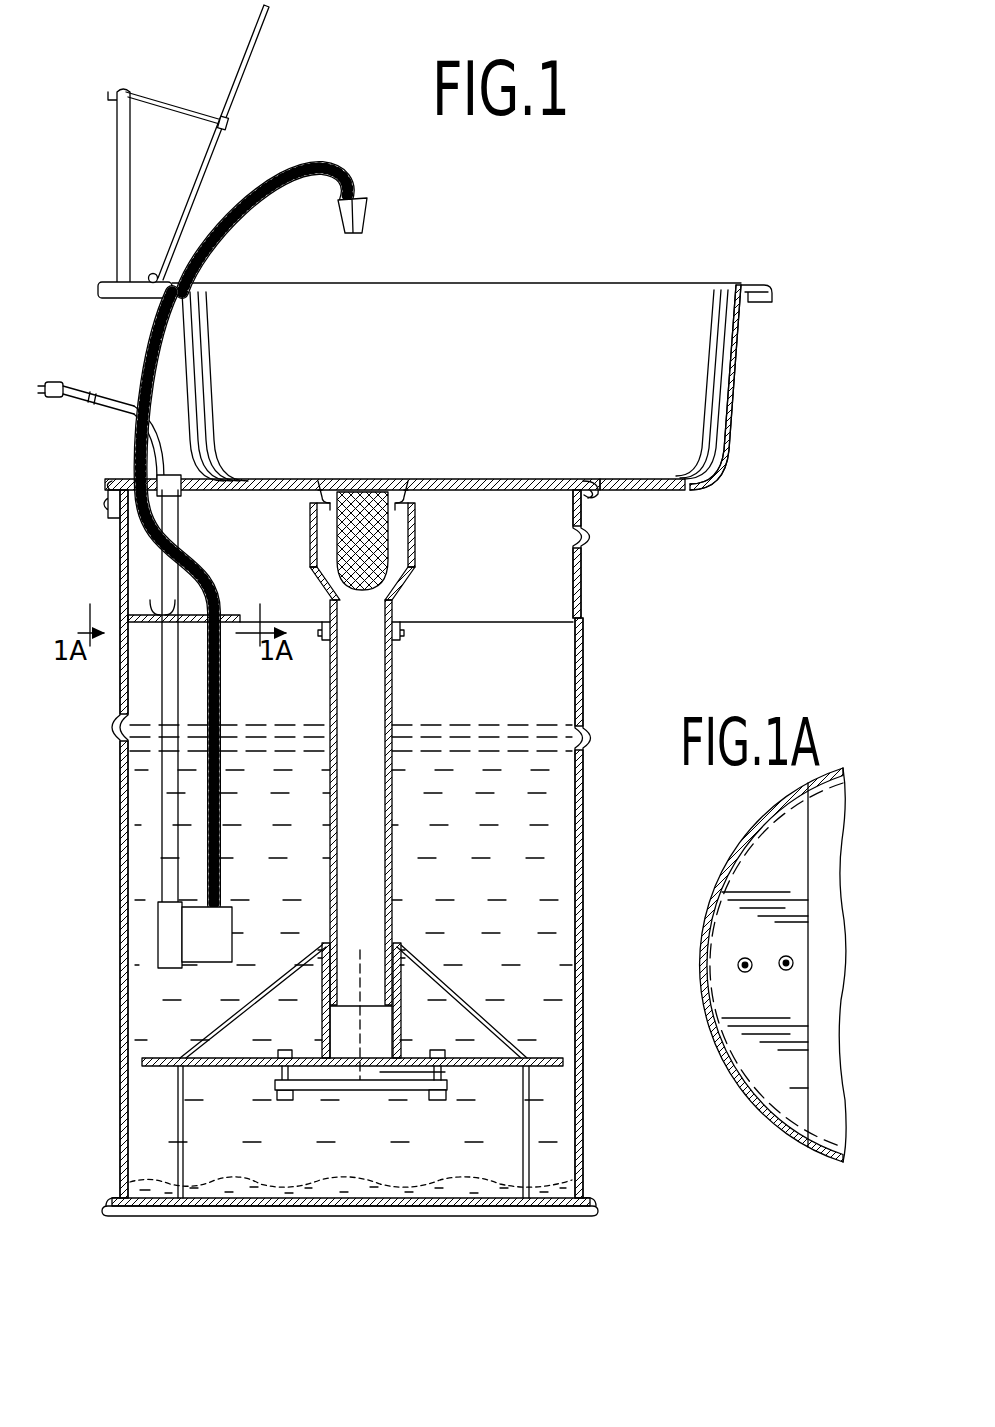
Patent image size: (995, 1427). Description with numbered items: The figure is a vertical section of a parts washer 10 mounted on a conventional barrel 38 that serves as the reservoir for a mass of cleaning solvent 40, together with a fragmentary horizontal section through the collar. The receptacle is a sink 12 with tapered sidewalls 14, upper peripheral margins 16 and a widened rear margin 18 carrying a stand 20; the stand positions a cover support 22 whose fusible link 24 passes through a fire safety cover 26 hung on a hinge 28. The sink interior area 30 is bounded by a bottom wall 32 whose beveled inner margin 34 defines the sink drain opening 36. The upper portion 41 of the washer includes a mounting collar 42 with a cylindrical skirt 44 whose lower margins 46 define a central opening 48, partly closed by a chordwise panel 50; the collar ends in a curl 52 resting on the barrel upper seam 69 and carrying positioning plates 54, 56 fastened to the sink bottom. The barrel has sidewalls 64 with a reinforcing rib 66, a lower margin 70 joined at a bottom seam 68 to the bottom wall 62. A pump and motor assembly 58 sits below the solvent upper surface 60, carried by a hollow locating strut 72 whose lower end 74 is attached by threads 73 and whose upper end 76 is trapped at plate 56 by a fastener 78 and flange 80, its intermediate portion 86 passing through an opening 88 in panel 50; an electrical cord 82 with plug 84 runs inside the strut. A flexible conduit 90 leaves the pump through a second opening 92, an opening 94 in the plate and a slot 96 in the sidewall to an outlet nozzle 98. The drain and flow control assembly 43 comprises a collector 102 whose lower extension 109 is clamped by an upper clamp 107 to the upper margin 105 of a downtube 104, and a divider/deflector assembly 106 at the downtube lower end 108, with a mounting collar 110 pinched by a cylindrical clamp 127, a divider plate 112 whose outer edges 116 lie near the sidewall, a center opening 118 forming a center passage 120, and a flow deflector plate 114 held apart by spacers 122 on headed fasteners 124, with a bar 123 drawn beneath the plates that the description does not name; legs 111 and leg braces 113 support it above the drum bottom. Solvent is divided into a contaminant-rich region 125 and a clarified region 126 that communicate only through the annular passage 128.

In FIG. 1, the parts washer 10 is at (112, 597).
In FIG. 1, the sink 12 is at (622, 236).
In FIG. 1, the sidewalls 14 is at (732, 402).
In FIG. 1, the upper peripheral margins 16 is at (752, 285).
In FIG. 1, the rear margin 18 is at (150, 276).
In FIG. 1, the stand 20 is at (117, 190).
In FIG. 1, the cover support 22 is at (160, 103).
In FIG. 1, the fusible link 24 is at (229, 126).
In FIG. 1, the fire safety cover 26 is at (252, 46).
In FIG. 1, the hinge 28 is at (172, 283).
In FIG. 1, the interior area 30 is at (519, 373).
In FIG. 1, the bottom wall 32 is at (525, 481).
In FIG. 1, the inner margin 34 is at (290, 479).
In FIG. 1, the sink drain opening 36 is at (373, 487).
In FIG. 1, the barrel 38 is at (598, 804).
In FIG. 1, the cleaning solvent 40 is at (489, 883).
In FIG. 1, the upper portion 41 is at (134, 355).
In FIG. 1, the mounting collar 42 is at (562, 563).
In FIG. 1, the drain and flow control assembly 43 is at (428, 654).
In FIG. 1, the cylindrical skirt 44 is at (585, 578).
In FIG. 1, the lower margins 46 is at (582, 625).
In FIG. 1, the central opening 48 is at (550, 628).
In FIG. 1, the panel 50 is at (240, 612).
In FIG. 1A, the panel 50 is at (808, 1088).
In FIG. 1, the curl 52 is at (600, 490).
In FIG. 1, the positioning plate 54 is at (486, 491).
In FIG. 1, the positioning plate 56 is at (200, 491).
In FIG. 1A, the positioning plate 56 is at (826, 1010).
In FIG. 1, the pump and motor assembly 58 is at (154, 912).
In FIG. 1, the upper surface 60 is at (296, 722).
In FIG. 1, the bottom wall 62 is at (237, 1190).
In FIG. 1, the sidewalls 64 is at (583, 912).
In FIG. 1A, the sidewalls 64 is at (768, 802).
In FIG. 1, the reinforcing rib 66 is at (590, 738).
In FIG. 1, the bottom seam 68 is at (594, 1210).
In FIG. 1, the upper seam 69 is at (108, 510).
In FIG. 1, the lower margin 70 is at (118, 1198).
In FIG. 1, the locating strut 72 is at (162, 700).
In FIG. 1A, the locating strut 72 is at (738, 958).
In FIG. 1, the threads 73 is at (165, 892).
In FIG. 1, the lower end 74 is at (170, 864).
In FIG. 1, the upper end 76 is at (186, 508).
In FIG. 1, the fastener 78 is at (220, 479).
In FIG. 1, the flange 80 is at (182, 476).
In FIG. 1, the electrical cord 82 is at (128, 412).
In FIG. 1, the electrical plug 84 is at (58, 382).
In FIG. 1, the intermediate portion 86 is at (212, 672).
In FIG. 1, the opening 88 is at (160, 625).
In FIG. 1A, the opening 88 is at (745, 974).
In FIG. 1, the flexible conduit 90 is at (212, 782).
In FIG. 1, the second opening 92 is at (224, 586).
In FIG. 1, the opening 94 is at (128, 460).
In FIG. 1, the slot 96 is at (186, 322).
In FIG. 1A, the slot 96 is at (786, 972).
In FIG. 1, the outlet nozzle 98 is at (367, 212).
In FIG. 1, the collector 102 is at (430, 562).
In FIG. 1, the downtube 104 is at (395, 705).
In FIG. 1, the upper margin 105 is at (324, 628).
In FIG. 1, the divider/deflector assembly 106 is at (418, 1060).
In FIG. 1, the upper clamp 107 is at (403, 630).
In FIG. 1, the lower end 108 is at (324, 968).
In FIG. 1, the lower extension 109 is at (345, 637).
In FIG. 1, the mounting collar 110 is at (401, 980).
In FIG. 1, the legs 111 is at (530, 1152).
In FIG. 1, the divider plate 112 is at (236, 1058).
In FIG. 1, the leg braces 113 is at (206, 1044).
In FIG. 1, the flow deflector plate 114 is at (398, 1088).
In FIG. 1, the radially outer edges 116 is at (562, 1054).
In FIG. 1, the center opening 118 is at (408, 1022).
In FIG. 1, the center passage 120 is at (278, 1086).
In FIG. 1, the spacers 122 is at (440, 1072).
In FIG. 1, the bracket bar 123 is at (332, 1070).
In FIG. 1, the headed fasteners 124 is at (300, 1058).
In FIG. 1, the contaminant-rich region 125 is at (215, 1118).
In FIG. 1, the clarified region 126 is at (265, 810).
In FIG. 1, the cylindrical clamp 127 is at (398, 928).
In FIG. 1, the annular passage 128 is at (136, 1060).